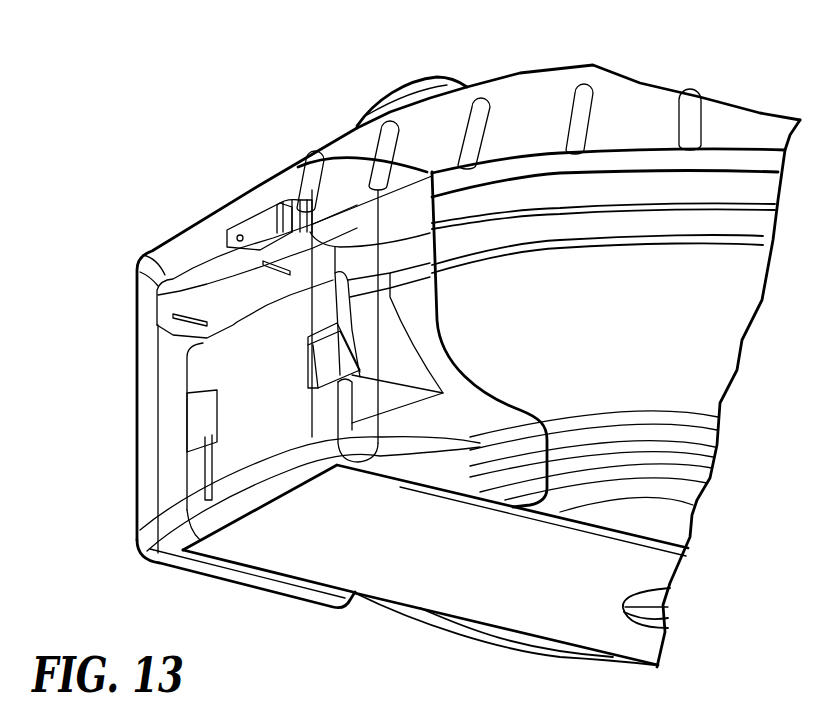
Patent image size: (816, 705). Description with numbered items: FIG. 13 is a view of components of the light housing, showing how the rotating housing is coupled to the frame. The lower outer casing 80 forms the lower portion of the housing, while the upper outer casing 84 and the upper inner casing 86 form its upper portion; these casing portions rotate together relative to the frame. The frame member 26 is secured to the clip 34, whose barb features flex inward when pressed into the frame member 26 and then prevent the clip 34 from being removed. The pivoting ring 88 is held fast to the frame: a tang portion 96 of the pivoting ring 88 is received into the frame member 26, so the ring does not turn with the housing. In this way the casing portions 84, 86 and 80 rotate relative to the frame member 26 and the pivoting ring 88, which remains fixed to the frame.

The frame member 26 is at (148, 381).
The clip 34 is at (497, 572).
The lower outer casing 80 is at (707, 354).
The upper outer casing 84 is at (540, 115).
The upper inner casing 86 is at (582, 187).
The pivoting ring 88 is at (518, 235).
The tang portion 96 is at (207, 279).